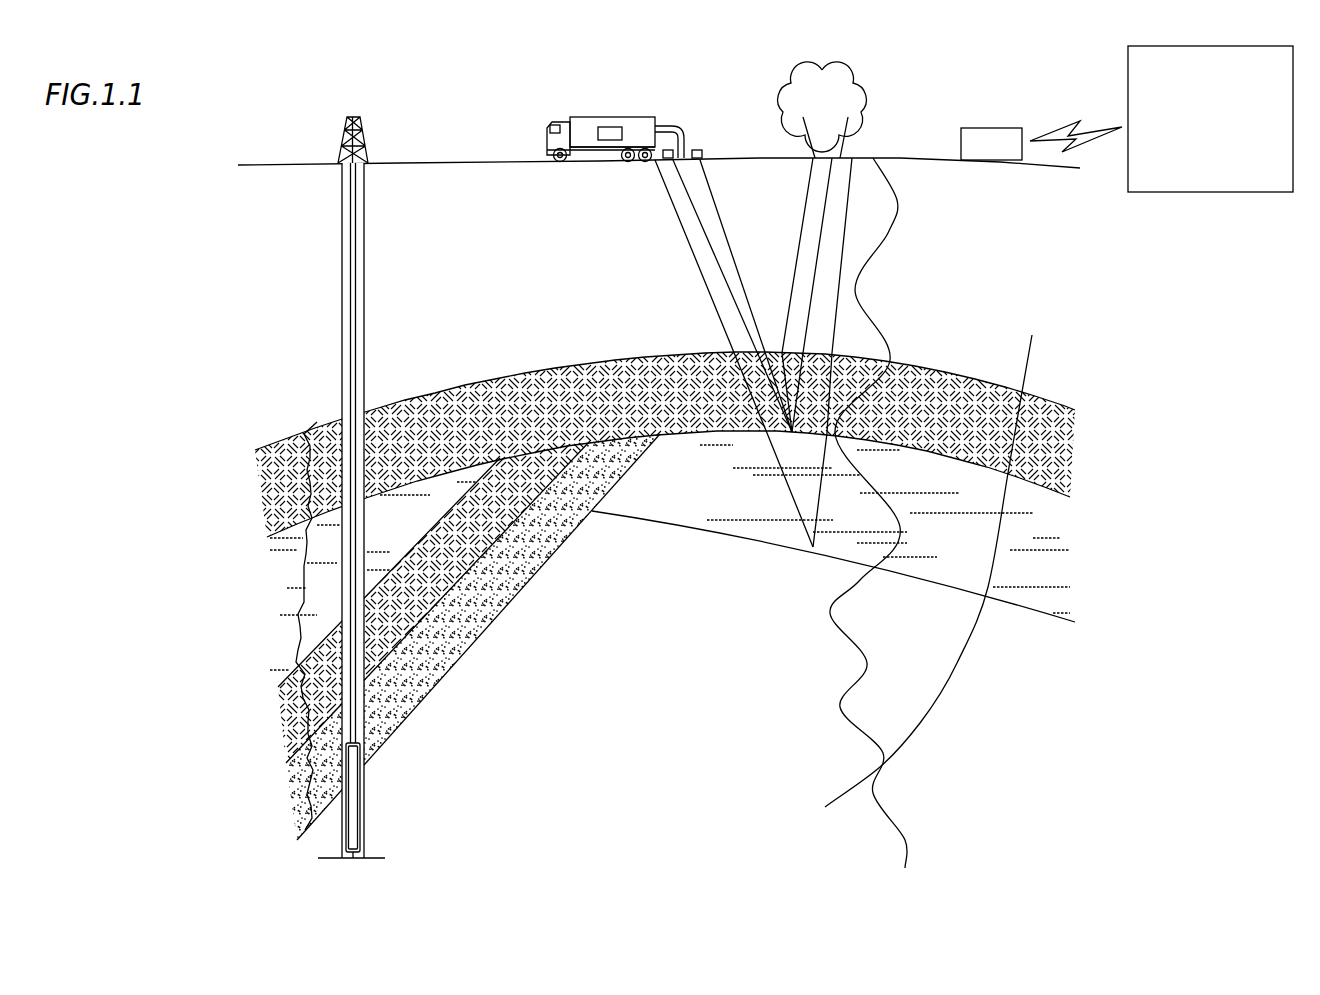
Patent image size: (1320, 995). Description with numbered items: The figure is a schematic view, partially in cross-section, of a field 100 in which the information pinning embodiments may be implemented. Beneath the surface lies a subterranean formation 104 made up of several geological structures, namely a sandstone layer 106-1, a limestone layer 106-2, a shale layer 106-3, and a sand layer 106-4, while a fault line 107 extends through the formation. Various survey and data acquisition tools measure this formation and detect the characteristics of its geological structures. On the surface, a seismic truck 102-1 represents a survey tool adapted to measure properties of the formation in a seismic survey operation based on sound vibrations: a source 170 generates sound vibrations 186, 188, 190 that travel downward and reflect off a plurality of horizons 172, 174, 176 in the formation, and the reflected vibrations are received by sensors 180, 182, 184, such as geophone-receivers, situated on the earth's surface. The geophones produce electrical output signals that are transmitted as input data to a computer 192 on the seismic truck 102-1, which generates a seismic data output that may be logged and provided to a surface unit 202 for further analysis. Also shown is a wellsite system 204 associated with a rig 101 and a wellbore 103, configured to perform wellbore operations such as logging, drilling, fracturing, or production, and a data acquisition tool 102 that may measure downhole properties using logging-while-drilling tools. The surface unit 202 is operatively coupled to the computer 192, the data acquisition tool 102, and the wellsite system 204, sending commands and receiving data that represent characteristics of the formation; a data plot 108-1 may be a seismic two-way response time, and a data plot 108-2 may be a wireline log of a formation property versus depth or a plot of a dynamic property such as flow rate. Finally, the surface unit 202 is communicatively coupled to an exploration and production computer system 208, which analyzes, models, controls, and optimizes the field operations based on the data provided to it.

The field 100 is at (935, 105).
The rig 101 is at (333, 127).
The data acquisition tool 102 is at (366, 801).
The seismic truck 102-1 is at (577, 115).
The wellbore 103 is at (370, 270).
The subterranean formation 104 is at (680, 635).
The sandstone layer 106-1 is at (500, 424).
The limestone layer 106-2 is at (422, 534).
The shale layer 106-3 is at (485, 550).
The sand layer 106-4 is at (525, 604).
The fault line 107 is at (1021, 346).
The data plot 108-1 is at (862, 668).
The data plot 108-2 is at (301, 618).
The source 170 is at (830, 98).
The horizon 172 is at (675, 350).
The horizon 174 is at (636, 424).
The horizon 176 is at (780, 547).
The sensor 180 is at (697, 147).
The sensor 182 is at (674, 146).
The sensor 184 is at (659, 146).
The sound vibration 186 is at (849, 251).
The sound vibration 188 is at (831, 234).
The sound vibration 190 is at (808, 211).
The computer 192 is at (611, 122).
The surface unit 202 is at (1006, 156).
The wellsite system 204 is at (380, 135).
The exploration and production (E&P) computer system 208 is at (1196, 175).